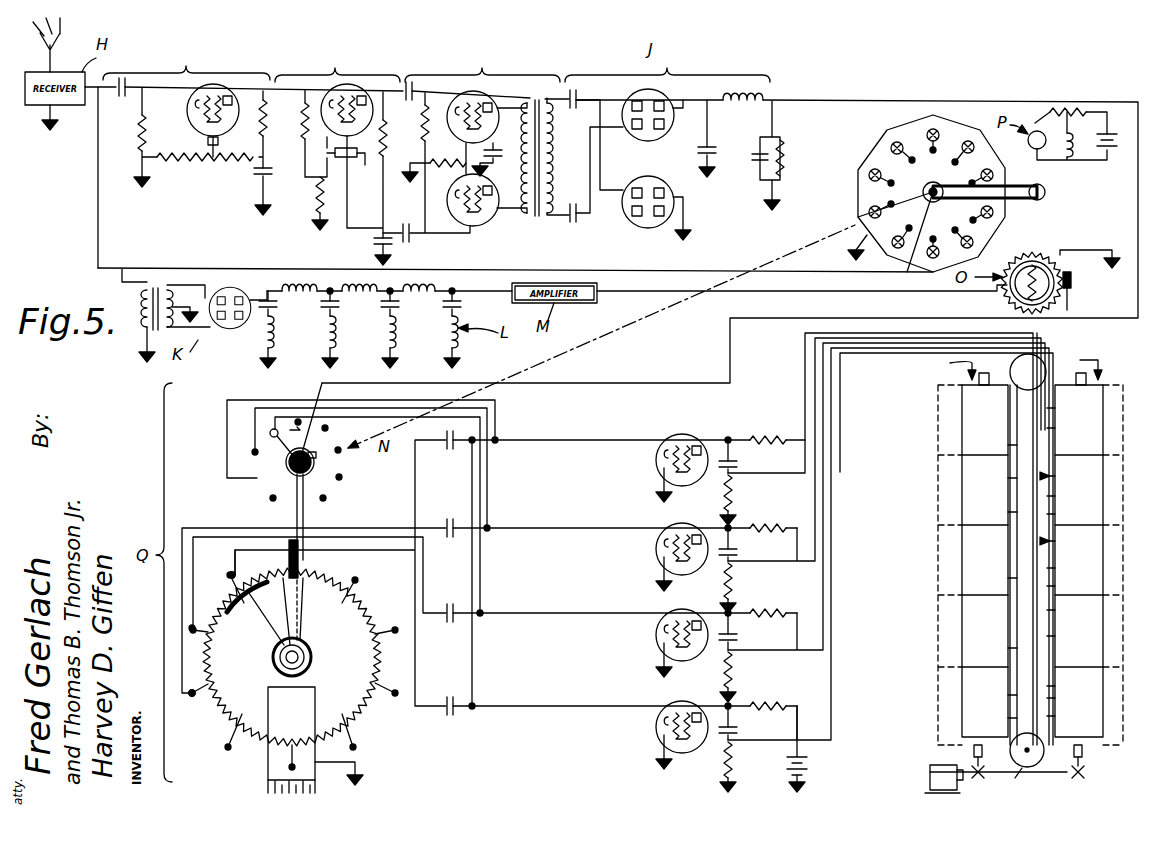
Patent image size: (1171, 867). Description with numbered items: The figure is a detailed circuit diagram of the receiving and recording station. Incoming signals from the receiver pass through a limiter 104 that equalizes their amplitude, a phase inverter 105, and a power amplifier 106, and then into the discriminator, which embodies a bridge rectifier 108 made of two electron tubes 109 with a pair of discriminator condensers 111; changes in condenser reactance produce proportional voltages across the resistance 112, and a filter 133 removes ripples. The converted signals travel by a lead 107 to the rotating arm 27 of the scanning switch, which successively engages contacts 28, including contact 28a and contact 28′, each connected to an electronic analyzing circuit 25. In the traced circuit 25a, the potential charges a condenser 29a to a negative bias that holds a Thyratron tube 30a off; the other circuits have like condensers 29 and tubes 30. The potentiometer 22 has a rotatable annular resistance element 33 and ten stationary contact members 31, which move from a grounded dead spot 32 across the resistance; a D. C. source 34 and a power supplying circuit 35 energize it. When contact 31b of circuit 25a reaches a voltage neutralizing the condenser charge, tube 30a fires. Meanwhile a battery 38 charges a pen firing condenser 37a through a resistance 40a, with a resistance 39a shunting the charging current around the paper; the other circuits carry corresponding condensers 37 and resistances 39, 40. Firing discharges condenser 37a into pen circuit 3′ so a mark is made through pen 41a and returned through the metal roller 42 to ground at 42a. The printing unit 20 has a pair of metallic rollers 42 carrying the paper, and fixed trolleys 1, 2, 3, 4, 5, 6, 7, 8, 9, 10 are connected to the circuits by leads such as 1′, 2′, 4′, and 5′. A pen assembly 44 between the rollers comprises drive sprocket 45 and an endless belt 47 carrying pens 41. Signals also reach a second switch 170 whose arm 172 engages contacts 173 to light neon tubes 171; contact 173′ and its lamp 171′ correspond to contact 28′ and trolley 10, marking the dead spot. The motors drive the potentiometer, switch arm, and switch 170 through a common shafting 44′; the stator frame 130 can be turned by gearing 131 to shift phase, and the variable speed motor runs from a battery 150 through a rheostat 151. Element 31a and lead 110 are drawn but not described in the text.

The contact strip or trolley 1 is at (1055, 428).
The lead 1′ is at (803, 368).
The contact strip or trolley 2 is at (813, 514).
The lead 2′ is at (1055, 496).
The contact strip or trolley 3 is at (1055, 586).
The pen circuit 3′ is at (817, 606).
The contact strip or trolley 4 is at (1055, 610).
The lead 4′ is at (818, 700).
The contact strip or trolley 5 is at (1055, 698).
The lead 5′ is at (1055, 686).
The contact strip or trolley 6 is at (1008, 695).
The contact strip or trolley 7 is at (1008, 648).
The contact strip or trolley 8 is at (1008, 578).
The contact strip or trolley 9 is at (1008, 478).
The contact strip or trolley 10 is at (1008, 445).
The printing unit 20 is at (946, 568).
The potentiometer 22 is at (212, 722).
The electronic analyzing or pen actuating circuit 25 is at (582, 443).
The electronic circuit 25a is at (569, 616).
The rotating arm 27 is at (287, 504).
The contact 28 is at (257, 480).
The contact 28′ is at (270, 500).
The contact 28a is at (273, 426).
The condenser 29 is at (448, 445).
The condenser 29a is at (448, 618).
The gas filled electron tube 30 is at (690, 436).
The Thyratron tube 30a is at (686, 615).
The stationary contact member 31 is at (360, 583).
The contact lever 31a is at (234, 596).
The contact 31b is at (300, 567).
The grounded or dead spot 32 is at (247, 564).
The annular resistance element 33 is at (206, 690).
The D. C. source 34 is at (268, 778).
The power supplying circuit 35 is at (268, 714).
The pen firing condenser 37 is at (738, 464).
The pen firing condenser 37a is at (740, 640).
The battery 38 is at (808, 766).
The resistance 39 is at (734, 490).
The resistance 39a is at (736, 664).
The resistance 40 is at (766, 434).
The resistance 40a is at (764, 613).
The pen 41 is at (1018, 775).
The pen 41a is at (1055, 476).
The metallic roller 42 is at (962, 740).
The ground 42a is at (1021, 362).
The pen assembly 44 is at (1040, 765).
The shafting 44′ is at (605, 334).
The drive sprocket 45 is at (1046, 364).
The endless belt 47 is at (1008, 512).
The limiter 104 is at (187, 129).
The phase inverter 105 is at (337, 154).
The power amplifier 106 is at (476, 142).
The lead 107 is at (1028, 101).
The bridge rectifier 108 is at (689, 138).
The electron tube 109 is at (640, 176).
The ground lead 110 is at (98, 176).
The discriminator condenser 111 is at (580, 97).
The resistance 112 is at (783, 150).
The stator frame 130 is at (1046, 260).
The gearing 131 is at (1072, 285).
The filter 133 is at (722, 95).
The battery 150 is at (1114, 152).
The rheostat 151 is at (1075, 108).
The switch 170 is at (926, 193).
The neon tube 171 is at (917, 130).
The neon lamp 171′ is at (878, 213).
The arm 172 is at (986, 178).
The contact 173 is at (955, 151).
The contact 173′ is at (880, 204).